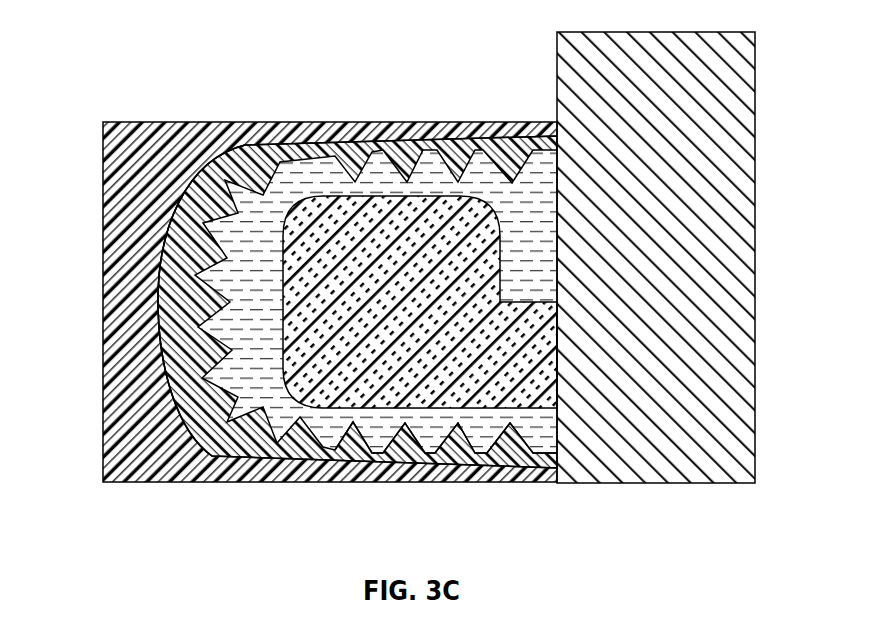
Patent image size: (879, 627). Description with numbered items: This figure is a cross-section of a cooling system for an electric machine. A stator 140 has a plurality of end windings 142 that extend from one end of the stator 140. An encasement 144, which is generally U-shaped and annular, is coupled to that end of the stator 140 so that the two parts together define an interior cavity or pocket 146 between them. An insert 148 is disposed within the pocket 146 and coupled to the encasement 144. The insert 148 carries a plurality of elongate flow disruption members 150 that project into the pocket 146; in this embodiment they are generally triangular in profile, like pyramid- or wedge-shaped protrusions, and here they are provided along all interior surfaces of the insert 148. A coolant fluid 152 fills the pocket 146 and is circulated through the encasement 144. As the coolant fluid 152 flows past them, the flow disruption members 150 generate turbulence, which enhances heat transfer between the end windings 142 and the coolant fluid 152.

The stator 140 is at (755, 160).
The end windings 142 is at (382, 197).
The encasement 144 is at (103, 170).
The pocket 146 is at (228, 153).
The insert 148 is at (183, 438).
The flow disruption members 150 is at (510, 437).
The coolant fluid 152 is at (228, 283).